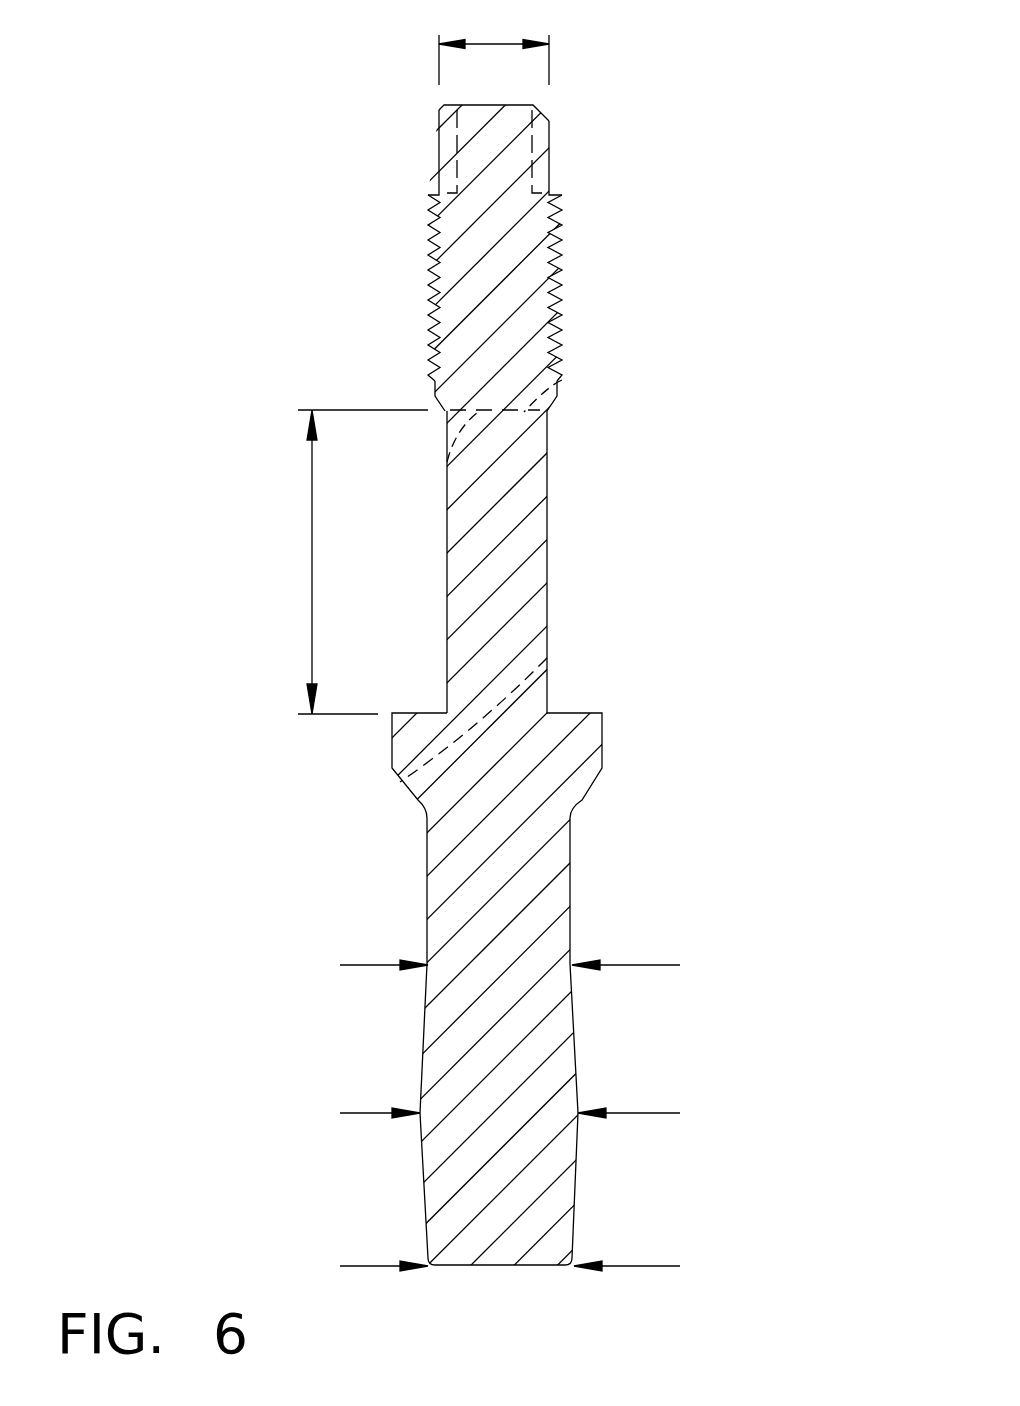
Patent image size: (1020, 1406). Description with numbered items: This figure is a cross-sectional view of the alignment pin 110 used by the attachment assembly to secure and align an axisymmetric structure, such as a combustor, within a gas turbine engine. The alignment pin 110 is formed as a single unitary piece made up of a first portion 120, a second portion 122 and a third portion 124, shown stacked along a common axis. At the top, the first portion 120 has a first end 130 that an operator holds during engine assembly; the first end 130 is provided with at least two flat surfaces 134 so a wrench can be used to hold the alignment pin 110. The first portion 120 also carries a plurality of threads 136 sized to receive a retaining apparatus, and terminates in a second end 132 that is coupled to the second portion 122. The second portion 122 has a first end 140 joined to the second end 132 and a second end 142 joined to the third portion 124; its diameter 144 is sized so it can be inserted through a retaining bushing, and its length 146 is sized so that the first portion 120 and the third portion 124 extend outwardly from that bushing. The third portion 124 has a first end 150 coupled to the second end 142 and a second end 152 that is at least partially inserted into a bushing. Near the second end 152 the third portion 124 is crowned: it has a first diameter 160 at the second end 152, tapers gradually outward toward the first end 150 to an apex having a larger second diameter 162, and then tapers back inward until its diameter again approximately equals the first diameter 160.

The alignment pin 110 is at (735, 88).
The first portion 120 is at (550, 138).
The second portion 122 is at (510, 556).
The third portion 124 is at (533, 878).
The first end 130 is at (540, 105).
The second end 132 is at (448, 455).
The flat surfaces 134 is at (440, 182).
The threads 136 is at (398, 292).
The first end 140 is at (572, 378).
The second end 142 is at (400, 780).
The diameter 144 is at (498, 44).
The length 146 is at (312, 562).
The first end 150 is at (560, 652).
The second end 152 is at (497, 1267).
The first diameter 160 is at (370, 965).
The second diameter 162 is at (370, 1113).